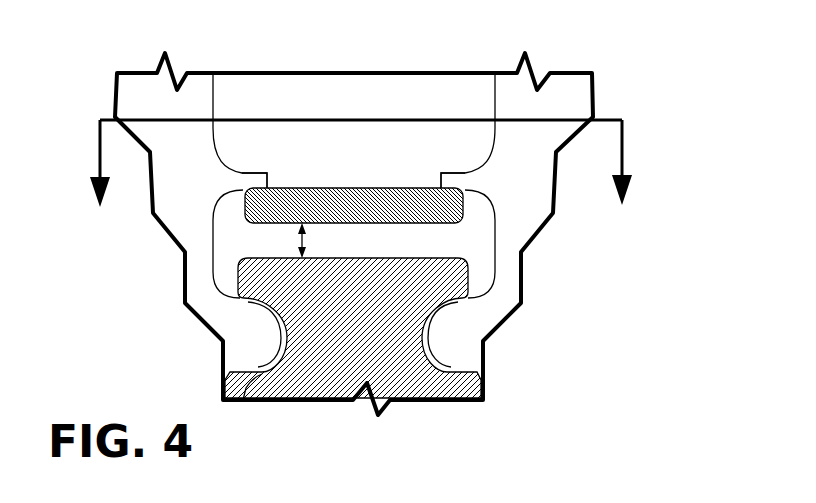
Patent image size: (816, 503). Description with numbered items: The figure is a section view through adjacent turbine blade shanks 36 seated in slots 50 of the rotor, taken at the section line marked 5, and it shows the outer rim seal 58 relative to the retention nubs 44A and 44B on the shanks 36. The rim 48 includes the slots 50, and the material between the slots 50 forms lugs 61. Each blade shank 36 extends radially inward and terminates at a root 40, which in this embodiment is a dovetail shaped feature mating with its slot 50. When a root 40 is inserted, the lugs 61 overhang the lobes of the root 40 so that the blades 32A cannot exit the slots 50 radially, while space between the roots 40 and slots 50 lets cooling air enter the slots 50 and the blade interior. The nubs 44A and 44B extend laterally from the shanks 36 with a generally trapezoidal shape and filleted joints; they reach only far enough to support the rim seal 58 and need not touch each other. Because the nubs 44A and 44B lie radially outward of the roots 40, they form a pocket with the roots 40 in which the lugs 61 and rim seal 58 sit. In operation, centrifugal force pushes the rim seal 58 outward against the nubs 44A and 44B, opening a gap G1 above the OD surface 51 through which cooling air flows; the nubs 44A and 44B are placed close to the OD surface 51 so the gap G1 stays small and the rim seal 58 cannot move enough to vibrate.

The blade 32A is at (614, 81).
The section line for FIG. 5 is at (359, 163).
The blade shank 36 is at (202, 110).
The retention nub 44A is at (242, 172).
The retention nub 44B is at (462, 175).
The outer rim seal 58 is at (351, 216).
The OD surface 51 is at (446, 258).
The rim 48 is at (360, 328).
The root 40 is at (258, 343).
The slot 50 is at (243, 400).
The lug 61 is at (252, 288).
The gap G1 is at (305, 239).